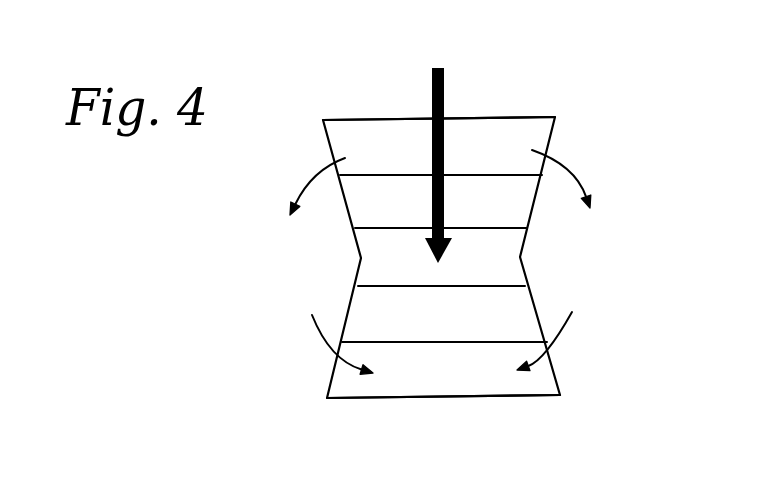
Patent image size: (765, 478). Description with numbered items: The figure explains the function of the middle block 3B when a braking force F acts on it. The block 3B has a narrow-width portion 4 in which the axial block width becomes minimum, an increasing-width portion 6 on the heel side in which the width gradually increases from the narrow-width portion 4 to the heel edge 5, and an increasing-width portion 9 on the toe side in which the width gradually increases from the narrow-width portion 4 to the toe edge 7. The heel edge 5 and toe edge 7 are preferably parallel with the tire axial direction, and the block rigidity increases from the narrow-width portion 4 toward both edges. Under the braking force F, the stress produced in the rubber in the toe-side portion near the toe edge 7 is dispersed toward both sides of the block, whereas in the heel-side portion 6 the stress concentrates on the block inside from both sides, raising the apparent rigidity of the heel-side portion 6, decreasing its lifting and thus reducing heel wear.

The middle block 3B is at (577, 145).
The toe edge 7 is at (473, 117).
The increasing-width portion on the block toe-side 9 is at (503, 143).
The narrow-width portion 4 is at (505, 260).
The increasing-width portion on the block heel-side 6 is at (562, 370).
The heel edge 5 is at (448, 398).
The braking force F is at (432, 100).